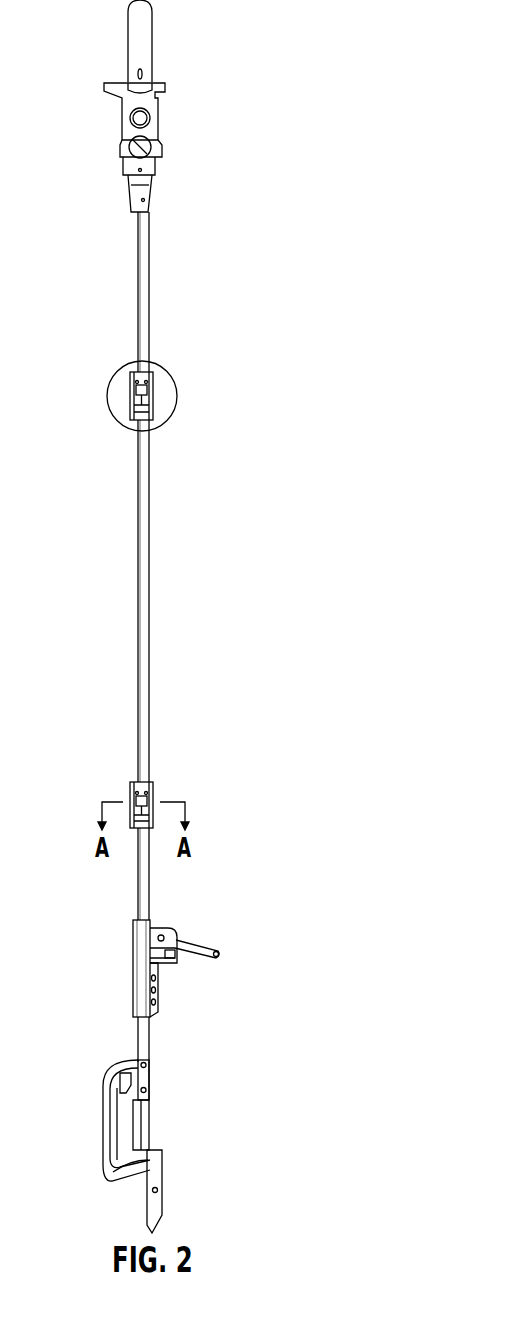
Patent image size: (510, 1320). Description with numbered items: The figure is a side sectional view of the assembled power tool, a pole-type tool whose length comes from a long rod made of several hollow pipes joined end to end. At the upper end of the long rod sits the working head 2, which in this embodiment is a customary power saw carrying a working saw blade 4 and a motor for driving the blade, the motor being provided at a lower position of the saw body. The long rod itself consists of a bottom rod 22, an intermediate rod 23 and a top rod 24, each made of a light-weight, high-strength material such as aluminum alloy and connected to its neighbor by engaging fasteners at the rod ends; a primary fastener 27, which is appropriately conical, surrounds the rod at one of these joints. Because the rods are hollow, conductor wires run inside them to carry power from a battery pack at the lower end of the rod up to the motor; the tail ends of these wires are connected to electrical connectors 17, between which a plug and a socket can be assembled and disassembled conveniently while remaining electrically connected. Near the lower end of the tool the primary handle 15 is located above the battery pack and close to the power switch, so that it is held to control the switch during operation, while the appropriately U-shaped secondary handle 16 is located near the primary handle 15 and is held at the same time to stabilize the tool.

The working head 2 is at (160, 152).
The working saw blade 4 is at (151, 40).
The primary handle 15 is at (103, 1122).
The secondary handle 16 is at (200, 957).
The electrical connectors 17 is at (152, 398).
The bottom rod 22 is at (151, 877).
The intermediate rod 23 is at (151, 612).
The top rod 24 is at (151, 297).
The primary fastener 27 is at (153, 380).